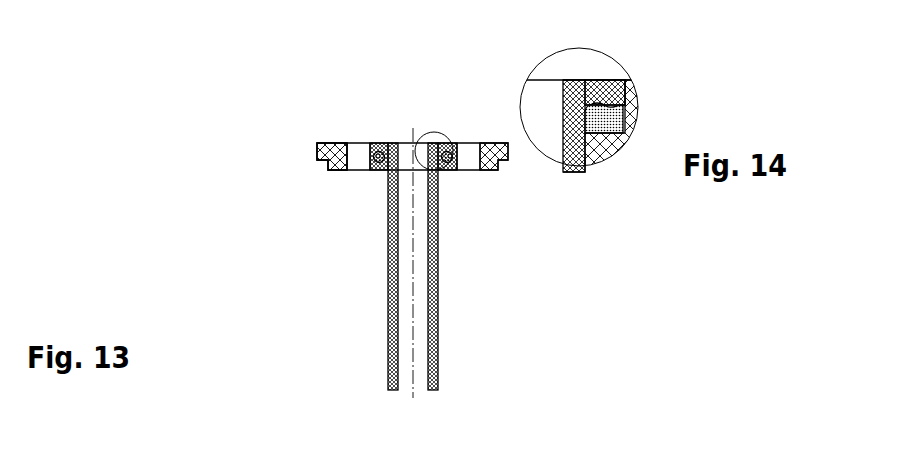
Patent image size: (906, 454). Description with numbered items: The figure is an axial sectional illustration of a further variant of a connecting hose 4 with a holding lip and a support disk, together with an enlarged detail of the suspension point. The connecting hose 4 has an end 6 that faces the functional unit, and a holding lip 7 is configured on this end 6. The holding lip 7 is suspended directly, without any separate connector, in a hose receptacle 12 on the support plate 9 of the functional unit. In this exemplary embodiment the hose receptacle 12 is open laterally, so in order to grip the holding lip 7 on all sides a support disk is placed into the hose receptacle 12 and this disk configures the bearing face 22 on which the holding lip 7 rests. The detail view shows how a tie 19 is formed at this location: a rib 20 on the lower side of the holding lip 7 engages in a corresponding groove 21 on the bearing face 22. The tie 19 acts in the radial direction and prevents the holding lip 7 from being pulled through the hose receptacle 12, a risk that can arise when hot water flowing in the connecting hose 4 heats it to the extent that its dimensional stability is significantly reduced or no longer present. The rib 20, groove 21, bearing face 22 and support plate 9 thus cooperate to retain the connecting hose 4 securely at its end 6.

In FIG. 13, the connecting hose 4 is at (437, 307).
In FIG. 14, the connecting hose 4 is at (585, 152).
In FIG. 13, the end of the connecting hose 6 is at (352, 158).
In FIG. 14, the holding lip 7 is at (576, 95).
In FIG. 13, the support plate 9 is at (333, 148).
In FIG. 14, the support plate 9 is at (618, 106).
In FIG. 13, the hose receptacle 12 is at (448, 174).
In FIG. 14, the hose receptacle 12 is at (594, 169).
In FIG. 14, the tie 19 is at (602, 84).
In FIG. 14, the rib 20 is at (592, 100).
In FIG. 14, the groove 21 is at (587, 117).
In FIG. 14, the bearing face 22 is at (620, 84).